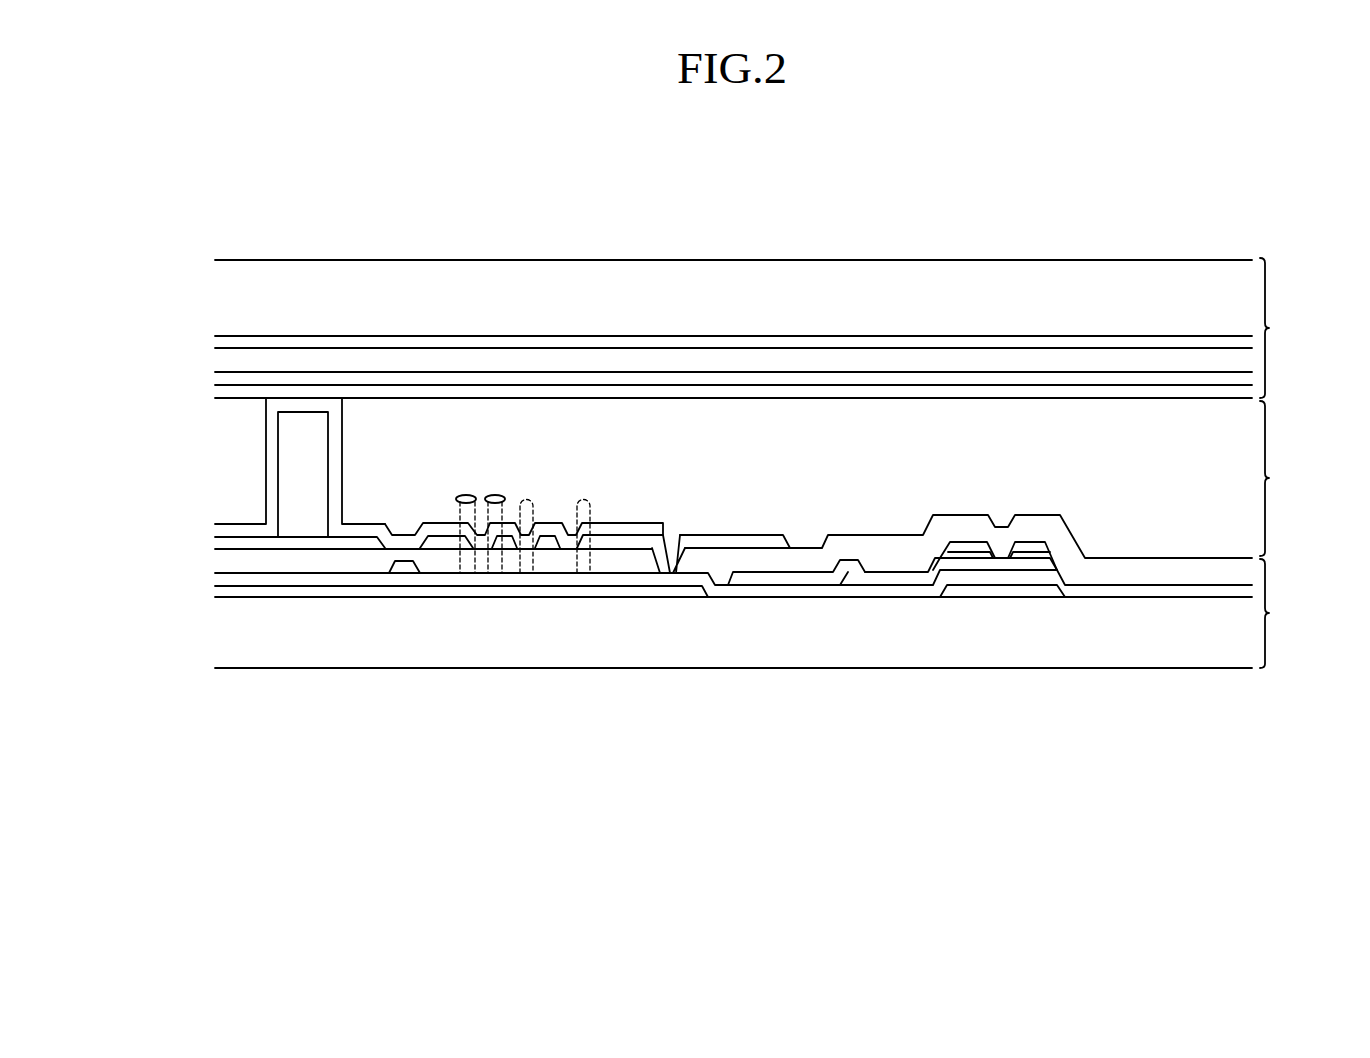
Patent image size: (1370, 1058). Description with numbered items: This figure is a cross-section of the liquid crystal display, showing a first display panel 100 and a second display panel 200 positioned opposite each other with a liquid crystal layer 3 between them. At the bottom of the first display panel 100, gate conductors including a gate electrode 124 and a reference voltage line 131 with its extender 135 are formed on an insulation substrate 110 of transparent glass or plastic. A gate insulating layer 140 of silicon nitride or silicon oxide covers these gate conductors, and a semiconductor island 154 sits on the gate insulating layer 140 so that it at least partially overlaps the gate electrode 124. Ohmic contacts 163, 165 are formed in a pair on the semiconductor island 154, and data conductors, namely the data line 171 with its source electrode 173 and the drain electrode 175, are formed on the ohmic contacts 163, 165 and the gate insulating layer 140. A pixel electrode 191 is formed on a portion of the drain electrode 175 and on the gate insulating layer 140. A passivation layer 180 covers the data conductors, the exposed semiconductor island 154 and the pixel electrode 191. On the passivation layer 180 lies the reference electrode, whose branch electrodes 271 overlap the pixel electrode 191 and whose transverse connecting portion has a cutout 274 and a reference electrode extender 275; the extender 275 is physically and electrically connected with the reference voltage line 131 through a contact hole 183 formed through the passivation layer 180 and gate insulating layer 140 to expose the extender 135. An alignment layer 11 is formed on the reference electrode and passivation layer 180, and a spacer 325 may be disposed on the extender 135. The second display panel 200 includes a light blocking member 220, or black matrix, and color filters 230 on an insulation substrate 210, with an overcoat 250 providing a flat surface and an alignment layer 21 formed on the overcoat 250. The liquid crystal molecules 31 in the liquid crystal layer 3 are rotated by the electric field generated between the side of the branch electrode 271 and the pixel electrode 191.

The second display panel 200 is at (1286, 328).
The liquid crystal layer 3 is at (1276, 478).
The first display panel 100 is at (1286, 613).
The insulation substrate 210 is at (960, 290).
The light blocking member 220 is at (690, 347).
The color filter 230 is at (1073, 356).
The overcoat 250 is at (850, 385).
The alignment layer 21 is at (782, 399).
The spacer 325 is at (294, 432).
The alignment layer 11 is at (276, 475).
The cutout 274 is at (422, 545).
The reference electrode extender 275 is at (613, 547).
The branch electrode 271 is at (442, 540).
The liquid crystal molecule 31 is at (466, 494).
The contact hole 183 is at (660, 560).
The passivation layer 180 is at (1162, 570).
The data line 171 is at (404, 565).
The gate insulating layer 140 is at (815, 588).
The reference voltage line 131 is at (556, 590).
The extender 135 is at (297, 592).
The pixel electrode 191 is at (760, 578).
The drain electrode 175 is at (884, 578).
The source electrode 173 is at (1038, 547).
The semiconductor island 154 is at (975, 563).
The ohmic contact 165 is at (970, 557).
The ohmic contact 163 is at (1030, 555).
The gate electrode 124 is at (1016, 590).
The insulation substrate 110 is at (1082, 648).